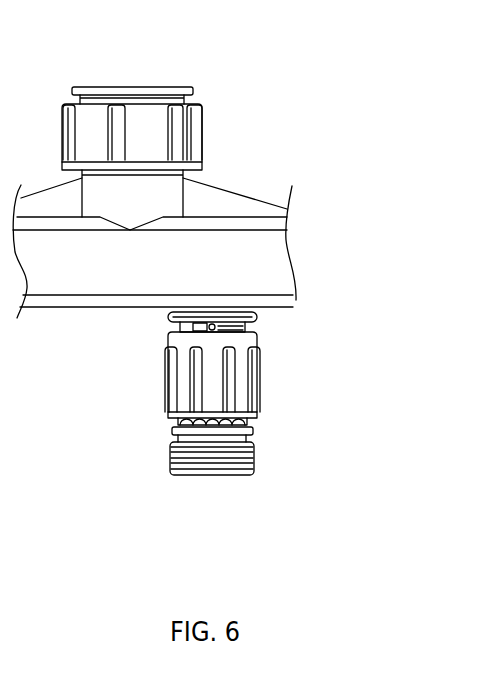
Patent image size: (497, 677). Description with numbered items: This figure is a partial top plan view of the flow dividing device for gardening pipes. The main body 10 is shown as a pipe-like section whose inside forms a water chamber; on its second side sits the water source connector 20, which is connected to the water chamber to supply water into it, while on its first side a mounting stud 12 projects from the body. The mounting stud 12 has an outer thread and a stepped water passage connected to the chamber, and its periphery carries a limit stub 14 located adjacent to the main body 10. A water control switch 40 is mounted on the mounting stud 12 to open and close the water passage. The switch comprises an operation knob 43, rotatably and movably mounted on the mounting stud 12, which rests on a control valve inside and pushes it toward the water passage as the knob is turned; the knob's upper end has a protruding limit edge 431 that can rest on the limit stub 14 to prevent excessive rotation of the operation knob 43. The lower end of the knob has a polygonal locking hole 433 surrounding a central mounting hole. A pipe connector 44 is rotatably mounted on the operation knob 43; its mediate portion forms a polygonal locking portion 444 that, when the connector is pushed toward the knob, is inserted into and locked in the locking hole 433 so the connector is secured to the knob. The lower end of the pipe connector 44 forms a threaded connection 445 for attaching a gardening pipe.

The main body 10 is at (290, 240).
The water source connector 20 is at (146, 83).
The water control switch 40 is at (265, 378).
The operation knob 43 is at (168, 383).
The limit edge 431 is at (194, 314).
The polygonal locking hole 433 is at (248, 418).
The pipe connector 44 is at (161, 502).
The polygonal locking portion 444 is at (240, 425).
The connection 445 is at (230, 457).
The mounting stud 12 is at (248, 325).
The limit stub 14 is at (218, 324).